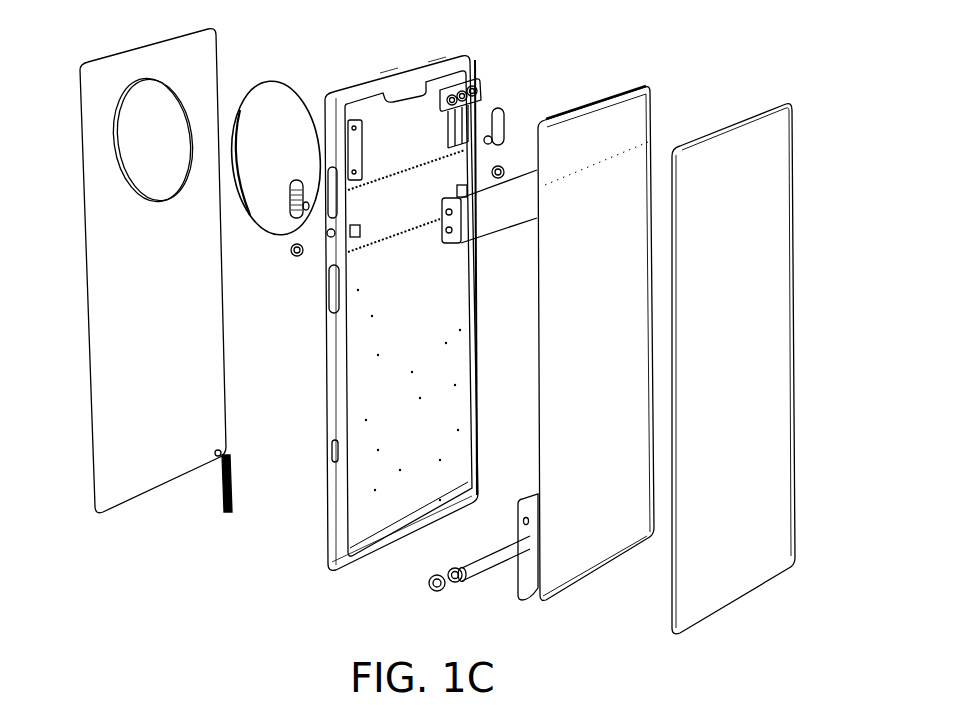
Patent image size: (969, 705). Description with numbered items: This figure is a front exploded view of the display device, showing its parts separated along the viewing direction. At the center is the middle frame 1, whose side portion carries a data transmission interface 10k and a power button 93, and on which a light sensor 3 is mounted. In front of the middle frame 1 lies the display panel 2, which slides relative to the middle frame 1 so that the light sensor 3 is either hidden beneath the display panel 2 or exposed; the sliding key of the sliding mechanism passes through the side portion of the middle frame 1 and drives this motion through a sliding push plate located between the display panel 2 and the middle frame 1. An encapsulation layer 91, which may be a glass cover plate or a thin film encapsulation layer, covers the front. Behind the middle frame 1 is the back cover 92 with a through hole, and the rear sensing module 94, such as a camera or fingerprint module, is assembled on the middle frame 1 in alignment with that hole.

The middle frame 1 is at (355, 88).
The display panel 2 is at (600, 542).
The light sensor 3 is at (473, 63).
The encapsulation layer 91 is at (777, 138).
The back cover 92 is at (108, 276).
The power button 93 is at (332, 297).
The rear sensing module 94 is at (293, 100).
The data transmission interface 10k is at (332, 462).